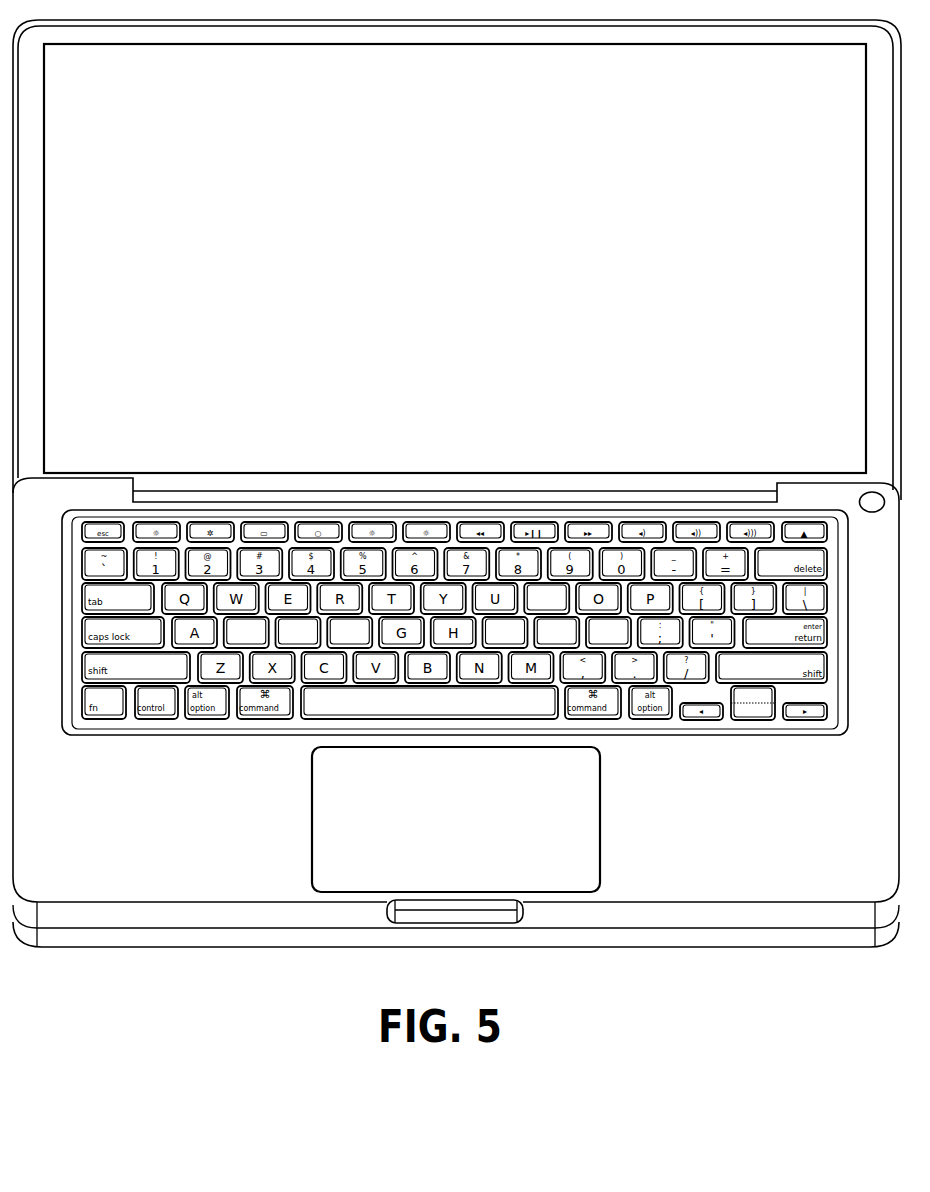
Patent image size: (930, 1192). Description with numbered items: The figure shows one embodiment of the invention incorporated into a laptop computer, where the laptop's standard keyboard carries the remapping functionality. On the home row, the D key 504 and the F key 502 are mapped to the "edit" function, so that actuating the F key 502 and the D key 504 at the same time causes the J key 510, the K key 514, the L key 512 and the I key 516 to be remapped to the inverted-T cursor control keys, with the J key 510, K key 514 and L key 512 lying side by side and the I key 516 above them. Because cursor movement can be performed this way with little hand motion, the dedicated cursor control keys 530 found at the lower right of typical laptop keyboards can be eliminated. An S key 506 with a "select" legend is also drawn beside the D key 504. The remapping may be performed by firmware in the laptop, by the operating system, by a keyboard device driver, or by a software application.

The F key 502 is at (362, 618).
The D key 504 is at (295, 615).
The S key (select) 506 is at (233, 617).
The J key 510 is at (489, 620).
The L key 512 is at (626, 623).
The K key 514 is at (571, 624).
The I key 516 is at (557, 592).
The dedicated cursor control keys 530 is at (753, 731).